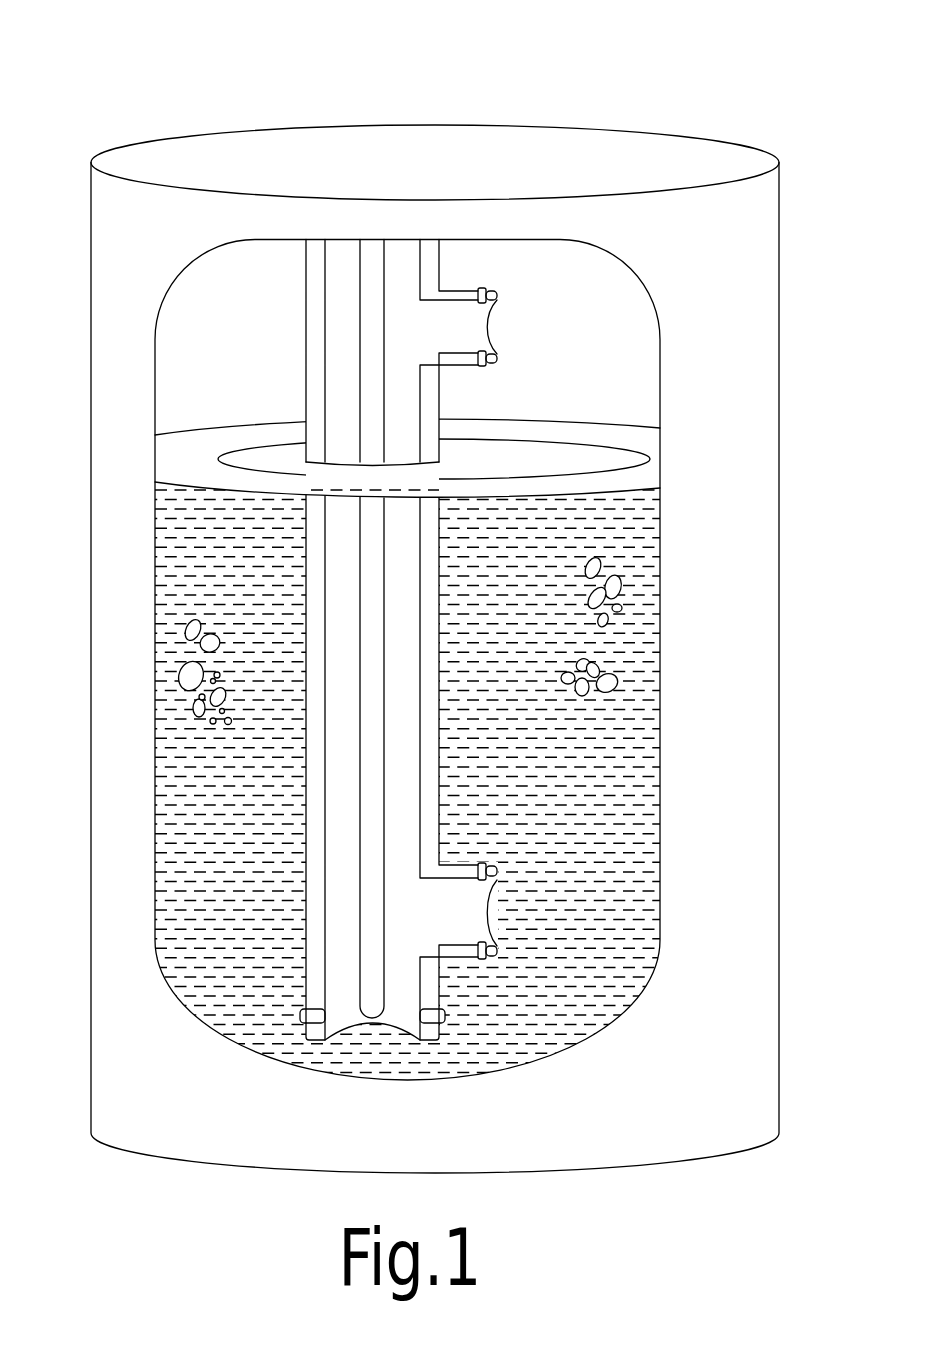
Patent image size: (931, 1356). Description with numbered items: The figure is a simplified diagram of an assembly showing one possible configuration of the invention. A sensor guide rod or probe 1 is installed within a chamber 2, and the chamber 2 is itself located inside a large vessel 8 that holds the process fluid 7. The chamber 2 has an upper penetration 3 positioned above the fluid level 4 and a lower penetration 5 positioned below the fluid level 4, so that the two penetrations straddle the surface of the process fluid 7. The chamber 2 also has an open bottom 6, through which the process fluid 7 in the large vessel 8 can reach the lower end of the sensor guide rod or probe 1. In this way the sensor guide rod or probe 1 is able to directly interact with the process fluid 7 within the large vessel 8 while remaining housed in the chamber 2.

The sensor guide rod or probe 1 is at (377, 280).
The chamber 2 is at (440, 636).
The upper penetration 3 is at (487, 325).
The fluid level 4 is at (533, 480).
The lower penetration 5 is at (487, 918).
The open bottom 6 is at (357, 1025).
The process fluid 7 is at (580, 767).
The large vessel 8 is at (780, 222).